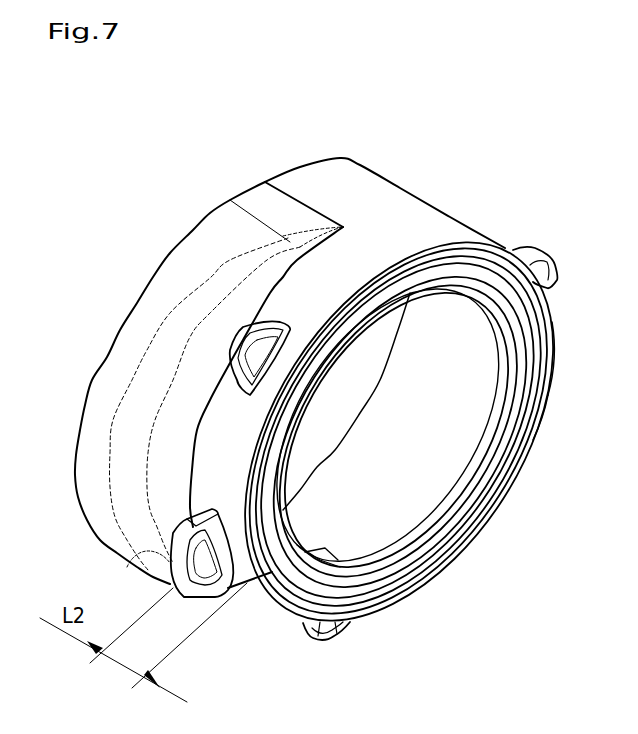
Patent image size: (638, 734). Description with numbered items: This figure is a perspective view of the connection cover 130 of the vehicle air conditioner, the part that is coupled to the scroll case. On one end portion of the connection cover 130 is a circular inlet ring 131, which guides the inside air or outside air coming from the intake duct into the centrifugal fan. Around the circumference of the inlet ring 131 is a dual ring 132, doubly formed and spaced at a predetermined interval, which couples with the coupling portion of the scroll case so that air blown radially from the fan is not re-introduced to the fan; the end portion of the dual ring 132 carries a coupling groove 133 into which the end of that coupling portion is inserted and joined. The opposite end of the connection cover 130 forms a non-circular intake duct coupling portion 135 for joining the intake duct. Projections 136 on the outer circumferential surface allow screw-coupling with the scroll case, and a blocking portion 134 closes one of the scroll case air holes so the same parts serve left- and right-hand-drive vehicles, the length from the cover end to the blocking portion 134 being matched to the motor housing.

The connection cover 130 is at (456, 186).
The inlet ring 131 is at (472, 275).
The dual ring 132 is at (542, 348).
The coupling groove 133 is at (549, 384).
The blocking portion 134 is at (168, 562).
The intake duct coupling portion 135 is at (144, 268).
The projections 136 is at (230, 362).